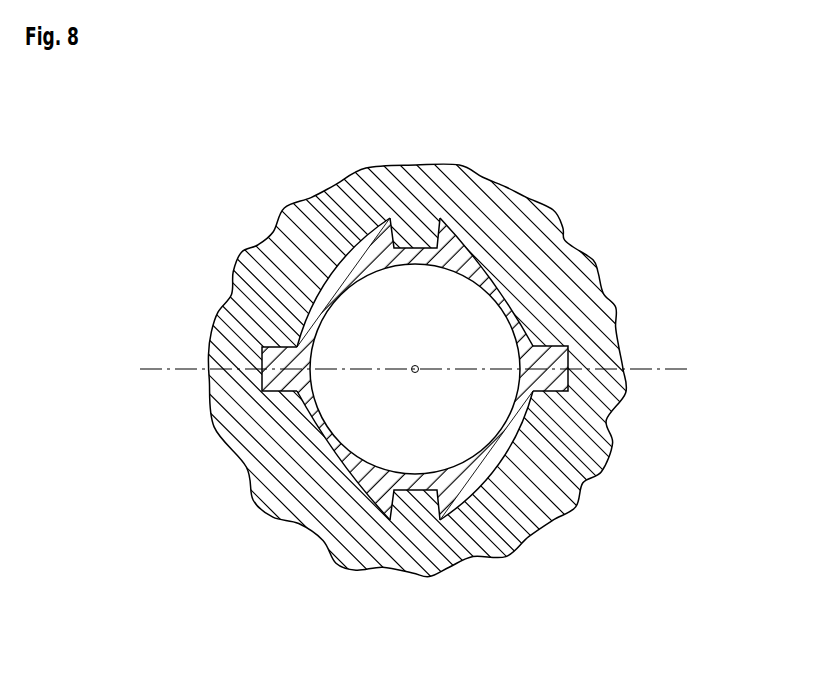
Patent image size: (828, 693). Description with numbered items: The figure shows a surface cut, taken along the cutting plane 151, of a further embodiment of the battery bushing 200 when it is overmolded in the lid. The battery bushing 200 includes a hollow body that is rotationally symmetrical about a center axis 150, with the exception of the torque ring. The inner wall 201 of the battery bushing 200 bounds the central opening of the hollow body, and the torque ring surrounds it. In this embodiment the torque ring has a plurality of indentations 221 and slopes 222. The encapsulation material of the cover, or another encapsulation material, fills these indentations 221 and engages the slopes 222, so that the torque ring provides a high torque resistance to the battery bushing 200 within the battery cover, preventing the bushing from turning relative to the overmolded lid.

The center axis 150 is at (420, 366).
The cutting plane 151 is at (657, 368).
The battery bushing 200 is at (488, 229).
The inner wall 201 is at (519, 381).
The indentations 221 is at (419, 224).
The slopes 222 is at (300, 286).